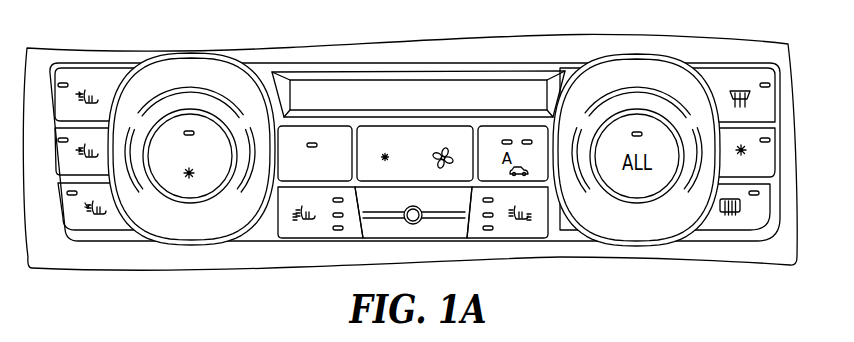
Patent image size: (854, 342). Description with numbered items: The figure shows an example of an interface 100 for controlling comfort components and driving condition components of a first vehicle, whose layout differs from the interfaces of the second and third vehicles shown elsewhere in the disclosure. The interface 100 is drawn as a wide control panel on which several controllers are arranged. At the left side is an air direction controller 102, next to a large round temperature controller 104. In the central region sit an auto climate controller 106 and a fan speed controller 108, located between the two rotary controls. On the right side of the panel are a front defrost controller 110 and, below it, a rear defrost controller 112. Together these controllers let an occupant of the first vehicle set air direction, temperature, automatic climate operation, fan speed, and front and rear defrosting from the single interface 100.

The interface 100 is at (495, 53).
The air direction controller 102 is at (90, 67).
The temperature controller 104 is at (197, 105).
The auto climate controller 106 is at (338, 158).
The fan speed controller 108 is at (423, 157).
The front defrost controller 110 is at (725, 108).
The rear defrost controller 112 is at (722, 213).